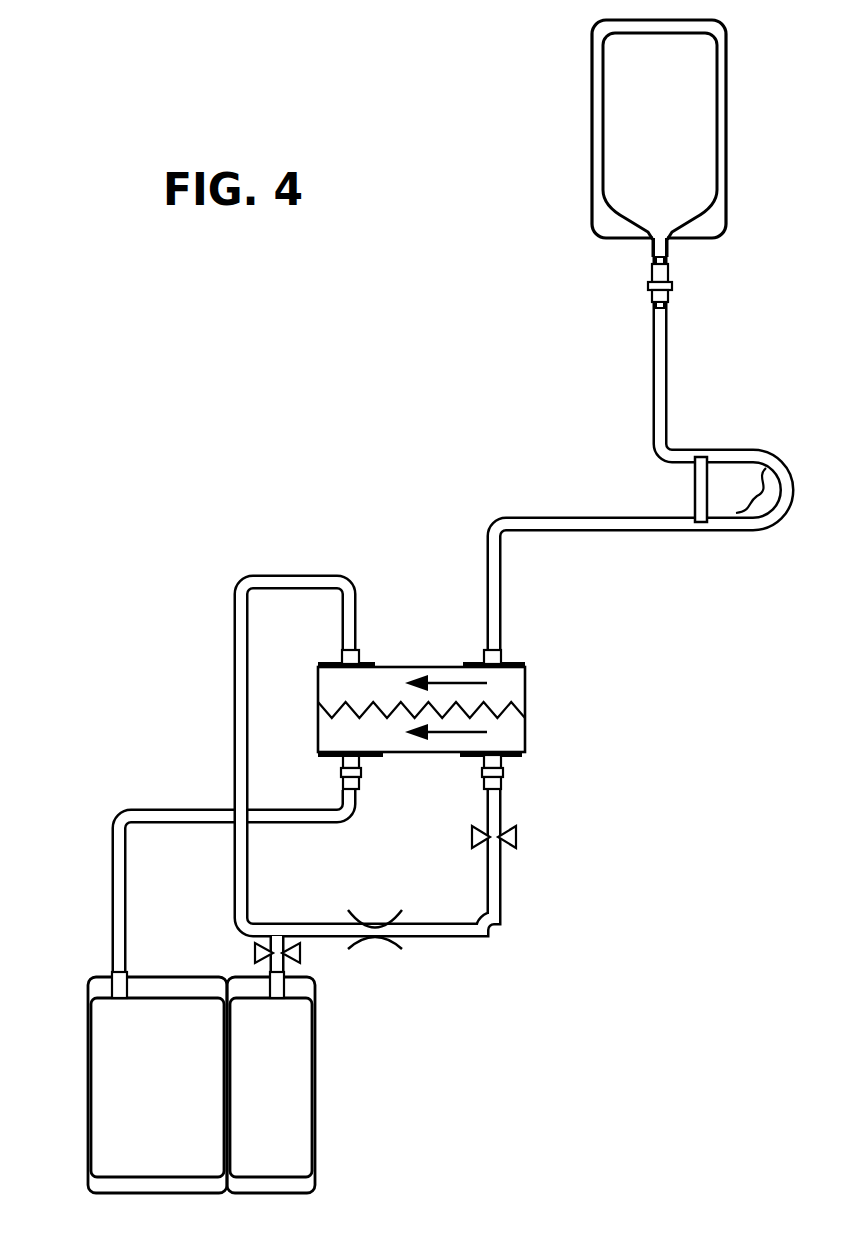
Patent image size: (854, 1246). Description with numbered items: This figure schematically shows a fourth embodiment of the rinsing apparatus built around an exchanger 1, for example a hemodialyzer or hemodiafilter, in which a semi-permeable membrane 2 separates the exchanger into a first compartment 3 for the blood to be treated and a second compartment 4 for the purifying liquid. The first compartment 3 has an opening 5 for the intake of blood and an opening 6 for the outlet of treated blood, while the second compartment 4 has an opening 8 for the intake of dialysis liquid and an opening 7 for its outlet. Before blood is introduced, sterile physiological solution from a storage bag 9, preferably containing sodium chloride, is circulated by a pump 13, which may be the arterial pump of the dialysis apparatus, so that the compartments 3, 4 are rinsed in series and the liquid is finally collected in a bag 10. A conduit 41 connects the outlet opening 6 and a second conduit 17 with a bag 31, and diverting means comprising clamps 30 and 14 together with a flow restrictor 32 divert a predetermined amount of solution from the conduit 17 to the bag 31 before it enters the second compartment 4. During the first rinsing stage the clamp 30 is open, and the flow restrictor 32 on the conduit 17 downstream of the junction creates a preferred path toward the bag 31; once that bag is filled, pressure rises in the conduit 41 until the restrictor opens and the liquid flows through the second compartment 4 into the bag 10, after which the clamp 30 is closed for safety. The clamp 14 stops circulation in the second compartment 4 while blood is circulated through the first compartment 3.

The exchanger 1 is at (409, 589).
The semi-permeable membrane 2 is at (502, 710).
The first compartment 3 is at (387, 680).
The second compartment 4 is at (392, 740).
The opening 5 is at (500, 657).
The opening 6 is at (337, 652).
The opening 7 is at (347, 775).
The opening 8 is at (500, 778).
The storage bag 9 is at (608, 185).
The bag 10 is at (100, 1068).
The pump 13 is at (735, 458).
The clamp 14 is at (517, 848).
The second conduit 17 is at (472, 937).
The clamp 30 is at (315, 965).
The bag 31 is at (298, 1108).
The flow restrictor 32 is at (408, 962).
The conduit 41 is at (307, 940).